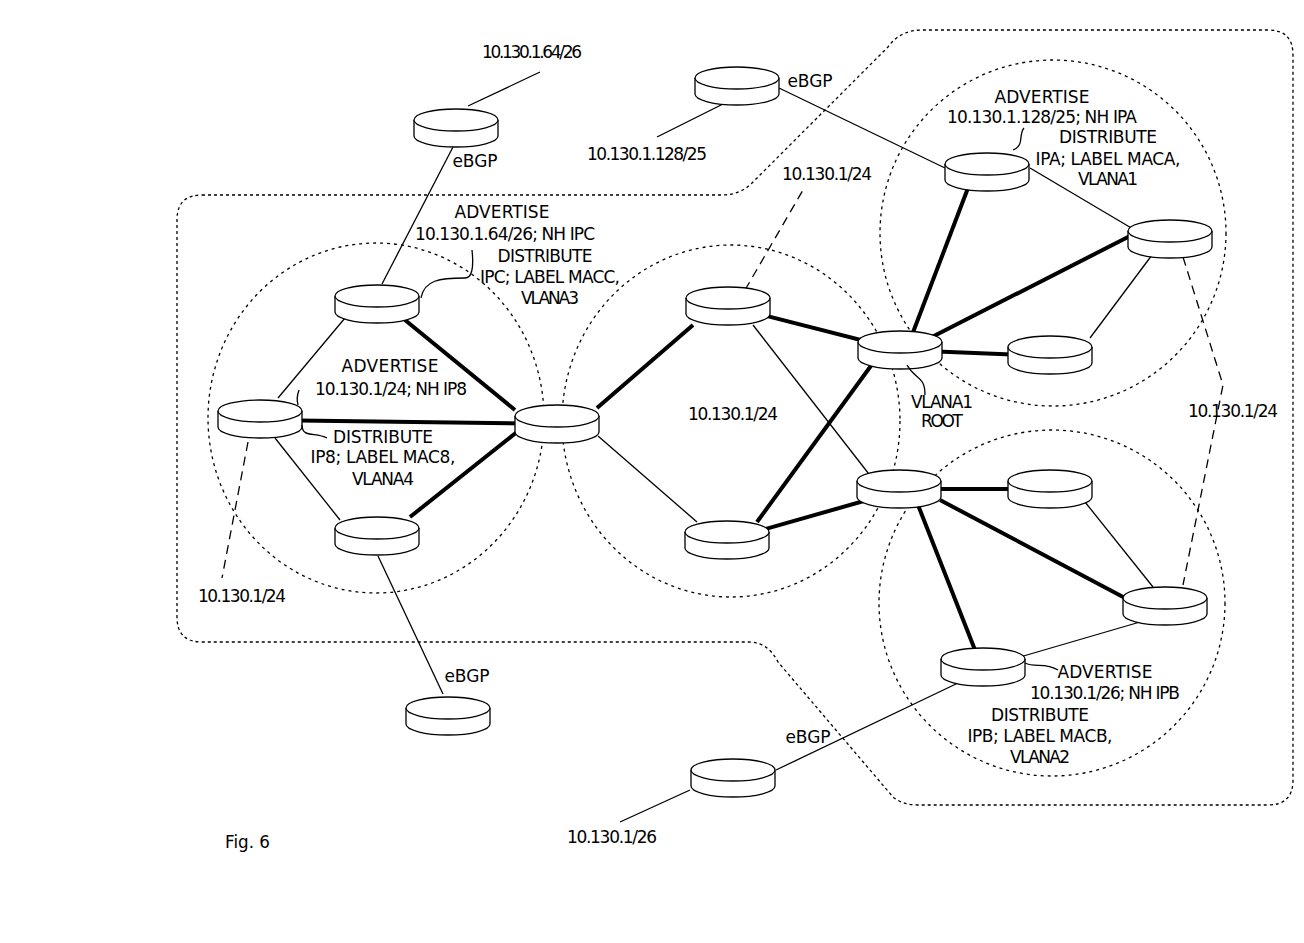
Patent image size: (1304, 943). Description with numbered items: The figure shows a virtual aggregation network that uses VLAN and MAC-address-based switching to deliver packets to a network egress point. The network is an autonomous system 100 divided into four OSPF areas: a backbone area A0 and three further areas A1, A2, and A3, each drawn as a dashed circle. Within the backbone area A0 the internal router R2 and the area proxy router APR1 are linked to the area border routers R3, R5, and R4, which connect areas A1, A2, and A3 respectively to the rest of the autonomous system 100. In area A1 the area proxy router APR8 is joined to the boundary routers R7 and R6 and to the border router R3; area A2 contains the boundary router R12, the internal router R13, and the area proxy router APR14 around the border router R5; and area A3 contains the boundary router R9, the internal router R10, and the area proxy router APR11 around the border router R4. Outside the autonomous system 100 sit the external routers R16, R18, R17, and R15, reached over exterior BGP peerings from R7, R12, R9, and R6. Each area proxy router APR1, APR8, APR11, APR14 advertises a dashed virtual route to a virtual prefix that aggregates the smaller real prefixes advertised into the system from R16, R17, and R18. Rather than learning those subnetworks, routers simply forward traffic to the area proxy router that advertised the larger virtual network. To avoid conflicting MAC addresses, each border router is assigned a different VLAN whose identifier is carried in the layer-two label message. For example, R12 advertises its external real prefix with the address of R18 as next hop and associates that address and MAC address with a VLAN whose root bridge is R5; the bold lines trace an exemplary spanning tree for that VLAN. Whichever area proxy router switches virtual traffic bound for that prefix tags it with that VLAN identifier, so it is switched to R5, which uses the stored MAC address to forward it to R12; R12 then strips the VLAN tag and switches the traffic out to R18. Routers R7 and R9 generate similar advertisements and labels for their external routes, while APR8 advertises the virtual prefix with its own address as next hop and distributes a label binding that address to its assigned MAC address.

The autonomous system 100 is at (300, 196).
The backbone area A0 is at (657, 262).
The area A1 is at (292, 262).
The area A2 is at (1200, 145).
The area A3 is at (1125, 760).
The internal router R2 is at (727, 540).
The area border router R3 is at (557, 424).
The area border router R4 is at (899, 489).
The area border router R5 is at (900, 350).
The autonomous system boundary router R6 is at (377, 536).
The autonomous system boundary router R7 is at (377, 304).
The autonomous system boundary router R9 is at (983, 667).
The internal router R10 is at (1050, 489).
The autonomous system boundary router R12 is at (987, 172).
The internal router R13 is at (1050, 355).
The external router R15 is at (448, 716).
The external router R16 is at (456, 128).
The external router R17 is at (733, 778).
The external router R18 is at (737, 86).
The area proxy router APR1 is at (728, 306).
The area proxy router APR8 is at (260, 419).
The area proxy router APR11 is at (1165, 606).
The area proxy router APR14 is at (1170, 239).